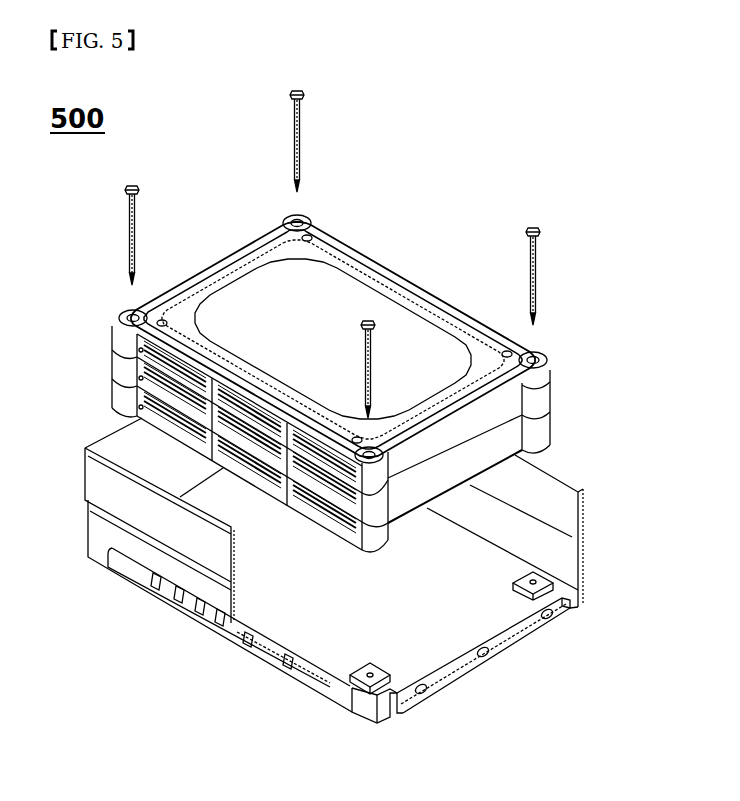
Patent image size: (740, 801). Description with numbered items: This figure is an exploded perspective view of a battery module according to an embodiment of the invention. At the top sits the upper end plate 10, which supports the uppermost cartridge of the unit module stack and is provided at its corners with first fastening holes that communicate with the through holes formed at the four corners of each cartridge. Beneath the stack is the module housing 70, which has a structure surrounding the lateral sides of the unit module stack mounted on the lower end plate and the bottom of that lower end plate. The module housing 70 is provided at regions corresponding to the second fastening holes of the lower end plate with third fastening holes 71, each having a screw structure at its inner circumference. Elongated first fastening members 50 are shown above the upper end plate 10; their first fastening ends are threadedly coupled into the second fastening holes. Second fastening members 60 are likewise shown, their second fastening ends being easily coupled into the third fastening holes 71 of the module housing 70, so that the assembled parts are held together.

The upper end plate 10 is at (370, 307).
The first fastening member 50 is at (536, 354).
The second fastening member 60 is at (537, 268).
The module housing 70 is at (574, 491).
The third fastening hole 71 is at (537, 578).